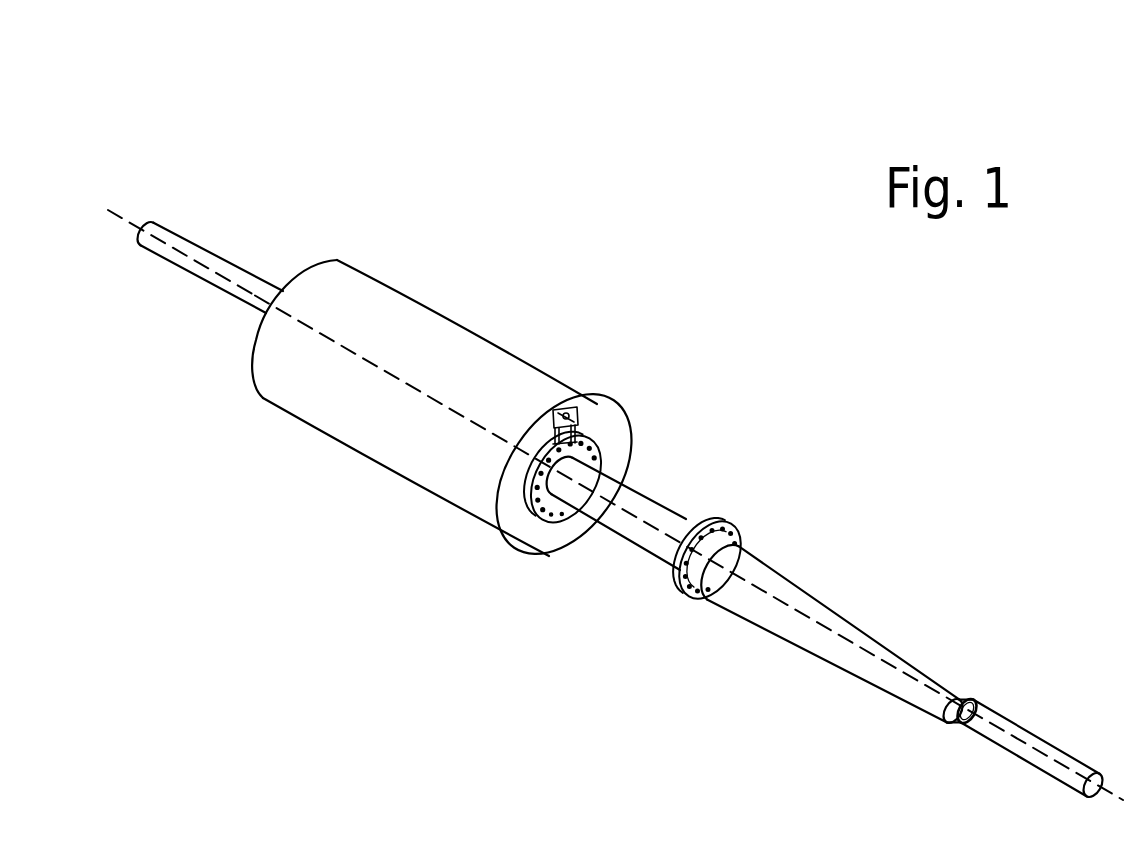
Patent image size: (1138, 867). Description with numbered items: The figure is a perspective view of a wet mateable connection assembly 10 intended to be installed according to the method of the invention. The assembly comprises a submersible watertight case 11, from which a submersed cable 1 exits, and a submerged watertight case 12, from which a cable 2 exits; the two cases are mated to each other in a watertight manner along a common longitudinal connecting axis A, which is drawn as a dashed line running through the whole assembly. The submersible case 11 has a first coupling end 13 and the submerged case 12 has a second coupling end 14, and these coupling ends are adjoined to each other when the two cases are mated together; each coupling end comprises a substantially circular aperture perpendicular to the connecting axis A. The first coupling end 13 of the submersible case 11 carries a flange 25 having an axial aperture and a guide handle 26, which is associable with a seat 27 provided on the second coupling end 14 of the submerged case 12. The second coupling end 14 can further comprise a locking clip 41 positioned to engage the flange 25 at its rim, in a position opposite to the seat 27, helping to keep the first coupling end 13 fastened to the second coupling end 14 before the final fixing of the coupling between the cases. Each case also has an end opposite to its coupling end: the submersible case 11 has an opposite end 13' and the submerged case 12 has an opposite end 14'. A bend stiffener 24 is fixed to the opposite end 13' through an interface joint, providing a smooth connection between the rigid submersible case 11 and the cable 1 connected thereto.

The common longitudinal connecting axis A is at (175, 223).
The submersed cable 1 is at (1017, 752).
The cable 2 is at (210, 262).
The wet mateable connection assembly 10 is at (615, 267).
The submersible watertight case 11 is at (662, 552).
The submerged watertight case 12 is at (373, 315).
The first coupling end 13 is at (624, 479).
The opposite end of the submersible case 13' is at (767, 553).
The second coupling end 14 is at (583, 439).
The opposite end of the submerged case 14' is at (207, 340).
The bend stiffener 24 is at (850, 622).
The flange 25 is at (533, 517).
The guide handle 26 is at (555, 413).
The seat 27 is at (580, 411).
The locking clip 41 is at (563, 527).